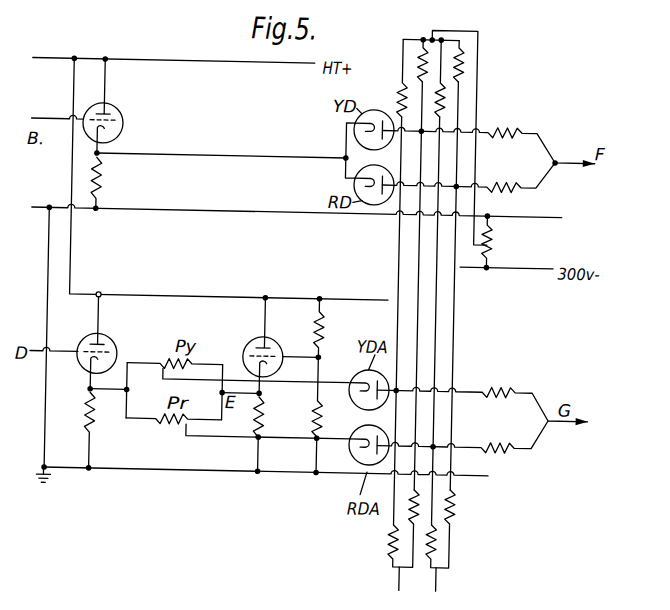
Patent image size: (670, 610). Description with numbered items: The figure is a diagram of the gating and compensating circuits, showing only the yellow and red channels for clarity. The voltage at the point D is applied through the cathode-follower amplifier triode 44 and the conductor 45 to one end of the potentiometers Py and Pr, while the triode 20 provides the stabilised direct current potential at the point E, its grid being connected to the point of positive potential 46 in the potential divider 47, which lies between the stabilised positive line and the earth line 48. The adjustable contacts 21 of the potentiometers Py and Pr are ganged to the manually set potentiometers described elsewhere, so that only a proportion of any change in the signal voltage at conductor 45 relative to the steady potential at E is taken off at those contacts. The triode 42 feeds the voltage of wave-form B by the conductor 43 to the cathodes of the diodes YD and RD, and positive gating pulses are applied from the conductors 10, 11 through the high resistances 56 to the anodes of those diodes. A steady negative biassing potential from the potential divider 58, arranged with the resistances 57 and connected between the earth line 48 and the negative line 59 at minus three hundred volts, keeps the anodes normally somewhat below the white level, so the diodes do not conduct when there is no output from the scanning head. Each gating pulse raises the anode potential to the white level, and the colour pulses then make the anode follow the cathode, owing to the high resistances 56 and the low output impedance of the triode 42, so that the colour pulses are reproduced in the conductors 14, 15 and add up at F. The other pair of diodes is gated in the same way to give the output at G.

The conductor 10 is at (403, 588).
The conductor 11 is at (439, 589).
The conductor 14 is at (544, 142).
The conductor 15 is at (544, 176).
The triode 20 is at (255, 345).
The potentiometer slider tap 21 is at (164, 376).
The triode 42 is at (118, 116).
The conductor 43 is at (140, 156).
The cathode-follower amplifier triode 44 is at (114, 344).
The conductor 45 is at (114, 391).
The point of positive potential 46 is at (313, 358).
The potential divider 47 is at (317, 326).
The earth line 48 is at (551, 218).
The resistances 56 is at (393, 532).
The resistances 57 is at (441, 95).
The potential divider 58 is at (491, 242).
The negative line 59 is at (549, 266).